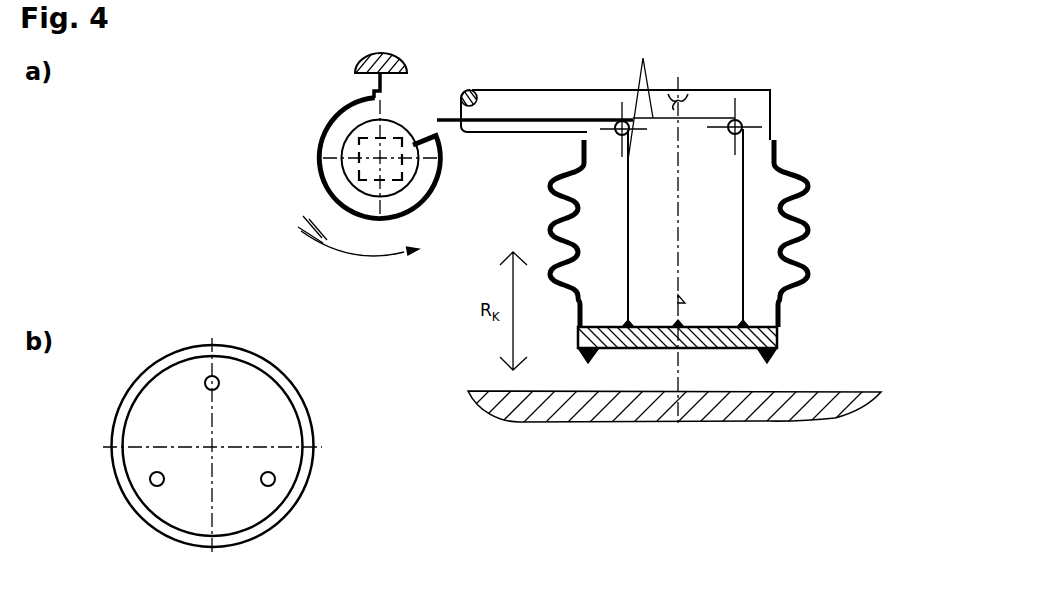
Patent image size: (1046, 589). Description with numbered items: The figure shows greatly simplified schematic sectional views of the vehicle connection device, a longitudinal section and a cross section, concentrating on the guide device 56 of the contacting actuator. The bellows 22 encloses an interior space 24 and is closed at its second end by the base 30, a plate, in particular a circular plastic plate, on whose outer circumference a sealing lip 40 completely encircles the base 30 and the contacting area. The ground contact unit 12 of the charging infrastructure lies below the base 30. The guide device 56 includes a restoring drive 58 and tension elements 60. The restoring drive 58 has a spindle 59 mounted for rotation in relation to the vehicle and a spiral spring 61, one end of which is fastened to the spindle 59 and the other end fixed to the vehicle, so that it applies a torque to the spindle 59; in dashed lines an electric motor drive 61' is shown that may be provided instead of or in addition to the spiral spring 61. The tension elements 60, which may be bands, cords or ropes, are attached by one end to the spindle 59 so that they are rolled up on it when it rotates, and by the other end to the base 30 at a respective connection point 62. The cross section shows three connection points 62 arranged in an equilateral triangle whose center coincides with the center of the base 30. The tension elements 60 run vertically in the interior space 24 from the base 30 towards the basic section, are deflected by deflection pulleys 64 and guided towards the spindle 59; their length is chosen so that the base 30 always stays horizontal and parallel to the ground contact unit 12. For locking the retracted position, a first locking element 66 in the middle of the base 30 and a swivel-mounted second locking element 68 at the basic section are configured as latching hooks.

In FIG. 4a, the ground contact unit 12 is at (757, 410).
In FIG. 4a, the bellows 22 is at (777, 158).
In FIG. 4b, the bellows 22 is at (293, 406).
In FIG. 4a, the interior space 24 is at (750, 105).
In FIG. 4a, the base 30 is at (778, 334).
In FIG. 4b, the base 30 is at (173, 385).
In FIG. 4a, the sealing lip 40 is at (773, 355).
In FIG. 4a, the guide device 56 is at (459, 274).
In FIG. 4a, the restoring drive 58 is at (306, 193).
In FIG. 4a, the spindle 59 is at (388, 135).
In FIG. 4a, the tension elements 60 is at (643, 58).
In FIG. 4a, the spiral spring 61 is at (326, 155).
In FIG. 4a, the electric motor drive 61' is at (307, 117).
In FIG. 4a, the connection point 62 is at (627, 323).
In FIG. 4b, the connection point 62 is at (215, 378).
In FIG. 4a, the deflection pulleys 64 is at (622, 123).
In FIG. 4a, the first locking element 66 is at (699, 95).
In FIG. 4a, the second locking element 68 is at (699, 290).